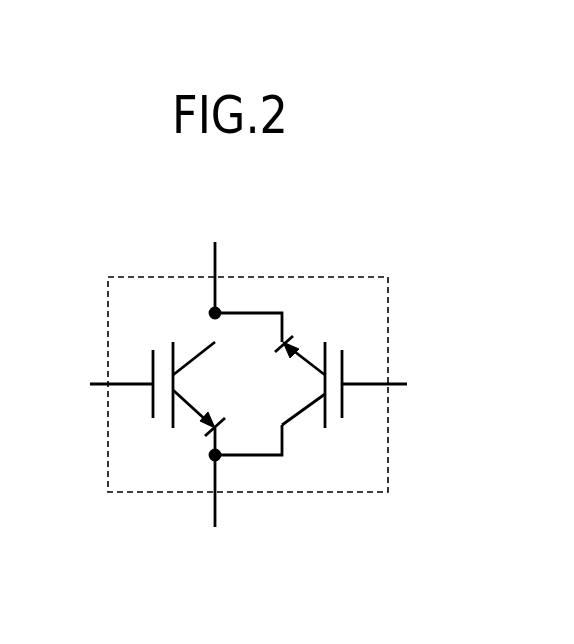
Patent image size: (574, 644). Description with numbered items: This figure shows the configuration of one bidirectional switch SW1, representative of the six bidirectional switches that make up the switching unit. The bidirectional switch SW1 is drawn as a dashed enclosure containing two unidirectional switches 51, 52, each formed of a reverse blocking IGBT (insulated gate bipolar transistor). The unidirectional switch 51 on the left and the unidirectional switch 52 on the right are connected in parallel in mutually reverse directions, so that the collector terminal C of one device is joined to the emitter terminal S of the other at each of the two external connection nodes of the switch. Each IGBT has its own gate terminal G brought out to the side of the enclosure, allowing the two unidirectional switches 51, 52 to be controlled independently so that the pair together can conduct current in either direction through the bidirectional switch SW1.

The unidirectional switch 51 is at (153, 363).
The unidirectional switch 52 is at (342, 363).
The bidirectional switch SW1 is at (343, 242).
The collector terminal C is at (247, 356).
The emitter (source) terminal S is at (247, 415).
The gate terminal G is at (248, 405).